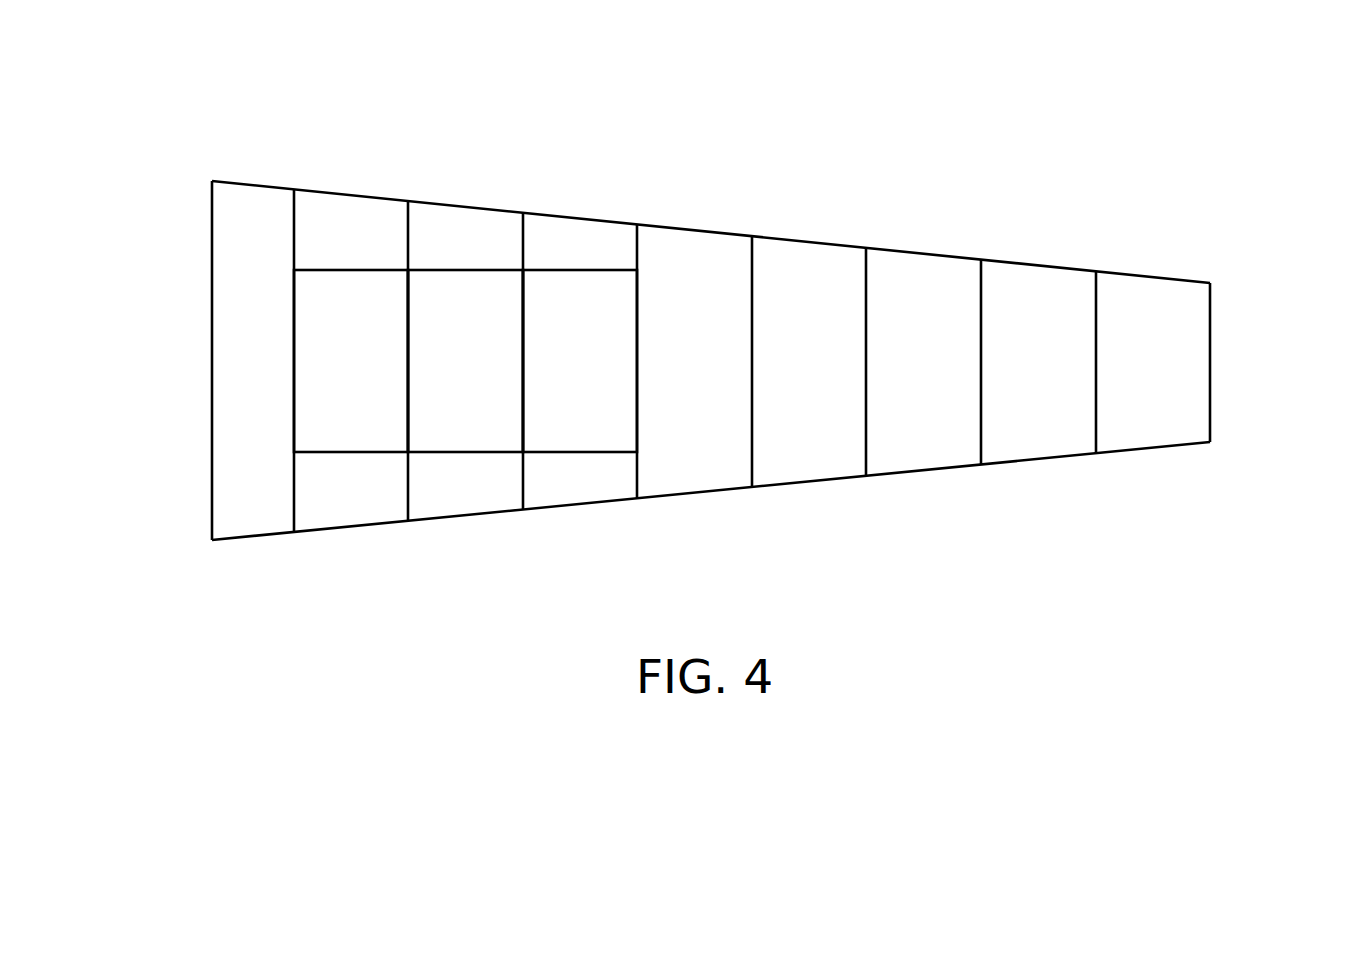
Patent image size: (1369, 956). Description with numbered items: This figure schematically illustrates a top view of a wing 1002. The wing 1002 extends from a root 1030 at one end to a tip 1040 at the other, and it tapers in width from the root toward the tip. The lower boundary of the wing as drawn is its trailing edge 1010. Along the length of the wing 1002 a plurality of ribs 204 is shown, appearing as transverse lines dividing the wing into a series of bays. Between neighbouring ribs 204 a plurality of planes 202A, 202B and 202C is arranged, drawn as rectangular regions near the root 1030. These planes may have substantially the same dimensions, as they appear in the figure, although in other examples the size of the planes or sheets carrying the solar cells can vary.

The wing 1002 is at (935, 167).
The root 1030 is at (212, 270).
The tip 1040 is at (1210, 342).
The trailing edge 1010 is at (895, 474).
The ribs 204 is at (981, 305).
The plane 202A is at (378, 359).
The plane 202B is at (500, 359).
The plane 202C is at (608, 359).